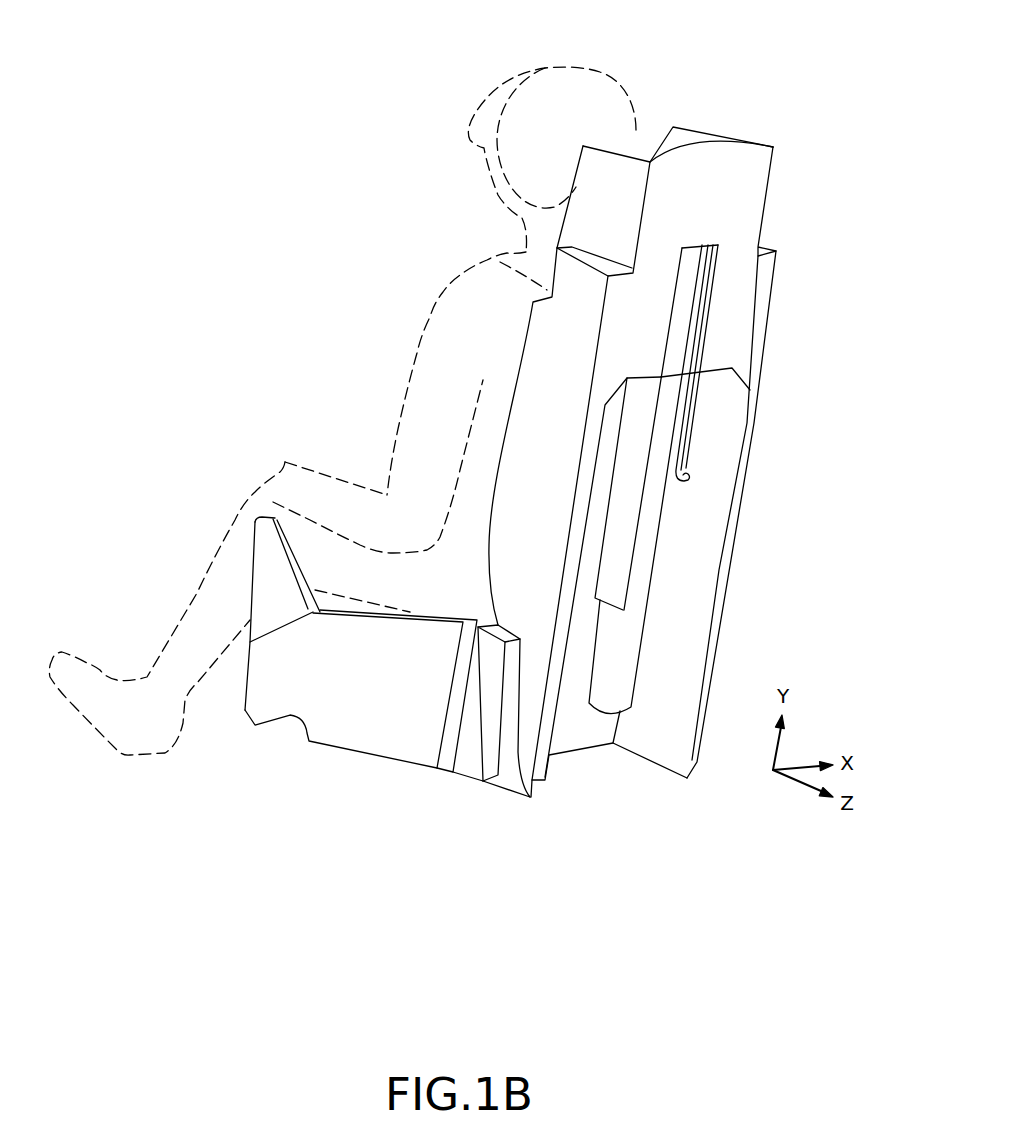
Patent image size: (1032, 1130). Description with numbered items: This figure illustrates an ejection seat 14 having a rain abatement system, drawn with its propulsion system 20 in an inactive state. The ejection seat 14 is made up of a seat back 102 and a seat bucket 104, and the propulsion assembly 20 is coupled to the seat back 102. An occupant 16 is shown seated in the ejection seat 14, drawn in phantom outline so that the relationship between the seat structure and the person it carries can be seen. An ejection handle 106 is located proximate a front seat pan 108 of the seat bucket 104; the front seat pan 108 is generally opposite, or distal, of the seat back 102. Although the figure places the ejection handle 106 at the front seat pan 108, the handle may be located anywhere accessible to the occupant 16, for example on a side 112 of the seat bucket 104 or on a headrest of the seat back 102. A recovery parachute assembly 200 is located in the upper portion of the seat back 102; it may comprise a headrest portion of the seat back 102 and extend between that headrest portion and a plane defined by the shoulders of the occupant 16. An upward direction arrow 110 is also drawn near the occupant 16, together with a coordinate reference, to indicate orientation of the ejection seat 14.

The ejection seat 14 is at (573, 446).
The occupant 16 is at (633, 71).
The propulsion system 20 is at (712, 406).
The seat back 102 is at (655, 462).
The seat bucket 104 is at (387, 666).
The ejection handle 106 is at (326, 450).
The front seat pan 108 is at (358, 605).
The upward direction 110 is at (362, 440).
The side 112 is at (350, 696).
The recovery parachute assembly 200 is at (740, 222).